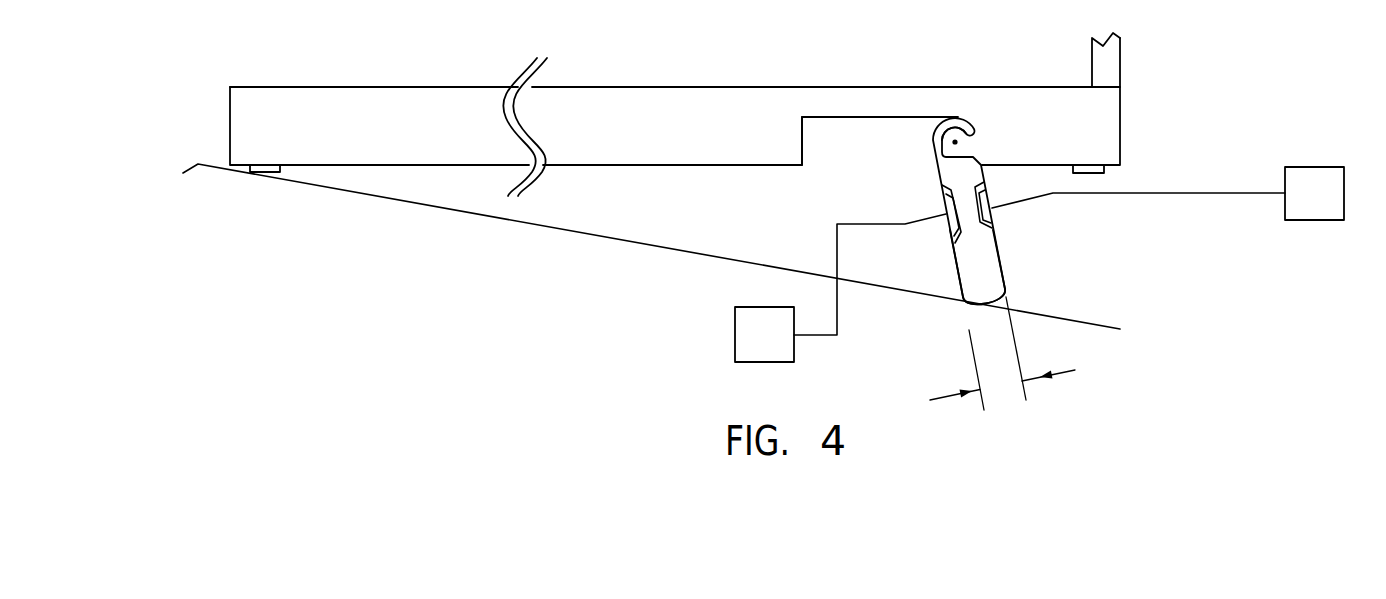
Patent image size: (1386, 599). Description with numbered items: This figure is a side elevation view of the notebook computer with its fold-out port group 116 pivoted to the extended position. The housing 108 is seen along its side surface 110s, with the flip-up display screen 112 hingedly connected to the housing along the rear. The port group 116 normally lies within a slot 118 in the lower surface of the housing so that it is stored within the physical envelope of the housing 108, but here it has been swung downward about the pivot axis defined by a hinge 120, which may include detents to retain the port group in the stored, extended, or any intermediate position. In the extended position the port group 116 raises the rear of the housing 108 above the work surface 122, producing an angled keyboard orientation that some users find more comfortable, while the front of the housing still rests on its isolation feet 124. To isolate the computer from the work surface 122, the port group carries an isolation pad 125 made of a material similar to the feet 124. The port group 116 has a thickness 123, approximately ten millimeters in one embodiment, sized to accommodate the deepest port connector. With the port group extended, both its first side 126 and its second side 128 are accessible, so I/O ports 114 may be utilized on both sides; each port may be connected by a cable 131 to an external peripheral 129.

The housing 108 is at (443, 82).
The side surface 110s is at (314, 111).
The flip-up display screen 112 is at (1122, 60).
The I/O port 114 is at (944, 209).
The fold-out port group 116 is at (990, 273).
The slot 118 is at (817, 150).
The hinge 120 is at (955, 142).
The work surface 122 is at (1061, 319).
The thickness 123 is at (1002, 392).
The isolation feet 124 is at (269, 177).
The isolation pad 125 is at (973, 303).
The first side 126 is at (1005, 268).
The second side 128 is at (958, 272).
The external peripheral 129 is at (736, 331).
The cable 131 is at (838, 310).